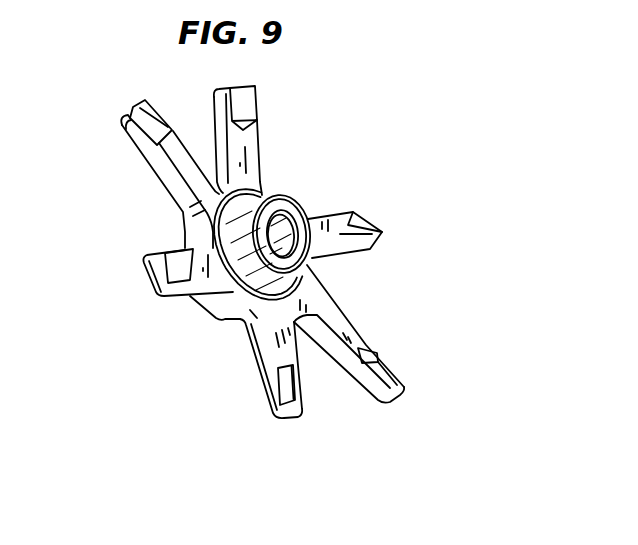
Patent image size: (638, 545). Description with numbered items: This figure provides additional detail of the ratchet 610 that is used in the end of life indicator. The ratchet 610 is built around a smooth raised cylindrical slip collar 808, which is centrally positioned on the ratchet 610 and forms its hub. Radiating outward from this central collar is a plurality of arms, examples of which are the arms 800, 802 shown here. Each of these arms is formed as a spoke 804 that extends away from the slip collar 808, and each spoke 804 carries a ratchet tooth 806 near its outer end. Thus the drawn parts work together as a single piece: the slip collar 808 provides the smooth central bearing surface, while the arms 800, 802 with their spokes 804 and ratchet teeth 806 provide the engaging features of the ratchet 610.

The ratchet 610 is at (322, 187).
The arm 800 is at (326, 303).
The arm 802 is at (250, 337).
The spoke 804 is at (290, 356).
The ratchet tooth 806 is at (288, 387).
The slip collar 808 is at (243, 240).